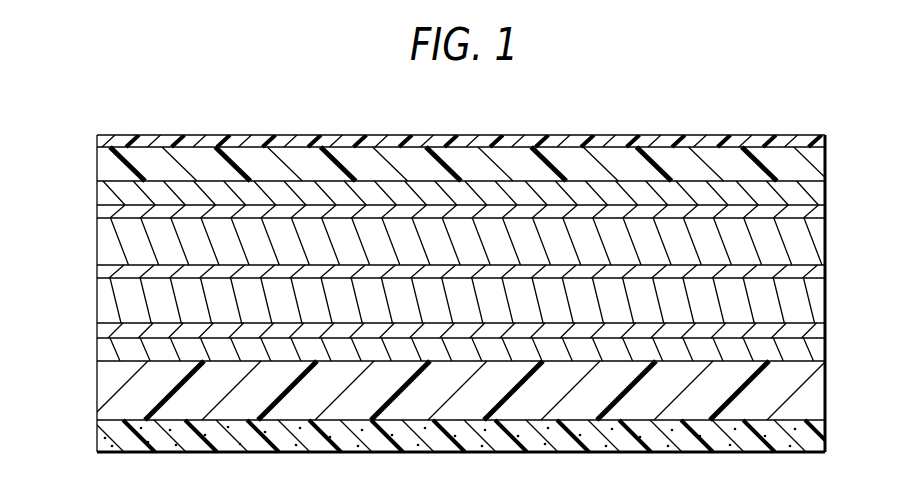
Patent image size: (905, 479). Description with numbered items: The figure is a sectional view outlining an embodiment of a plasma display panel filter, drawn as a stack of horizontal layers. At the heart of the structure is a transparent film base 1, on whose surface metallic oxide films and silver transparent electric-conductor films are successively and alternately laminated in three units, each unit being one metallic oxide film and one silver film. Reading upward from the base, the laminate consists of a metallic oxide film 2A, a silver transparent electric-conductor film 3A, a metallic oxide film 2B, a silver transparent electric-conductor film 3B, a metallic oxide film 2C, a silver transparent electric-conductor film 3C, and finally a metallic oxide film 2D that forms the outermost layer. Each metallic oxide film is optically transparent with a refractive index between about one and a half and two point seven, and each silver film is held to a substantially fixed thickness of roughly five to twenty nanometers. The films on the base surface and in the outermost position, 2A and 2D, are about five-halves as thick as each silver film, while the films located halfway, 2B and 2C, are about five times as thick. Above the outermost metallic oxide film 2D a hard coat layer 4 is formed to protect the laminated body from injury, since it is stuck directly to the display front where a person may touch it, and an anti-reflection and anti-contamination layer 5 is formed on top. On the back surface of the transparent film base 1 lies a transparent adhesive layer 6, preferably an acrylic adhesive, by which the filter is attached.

The transparent film base 1 is at (817, 399).
The metallic oxide film 2A is at (817, 357).
The metallic oxide film 2B is at (817, 307).
The metallic oxide film 2C is at (817, 249).
The metallic oxide film 2D is at (817, 201).
The silver transparent electric-conductor film 3A is at (101, 330).
The silver transparent electric-conductor film 3B is at (101, 271).
The silver transparent electric-conductor film 3C is at (101, 210).
The hard coat layer 4 is at (817, 176).
The anti-reflection and anti-contamination layer 5 is at (817, 149).
The transparent adhesive layer 6 is at (817, 444).